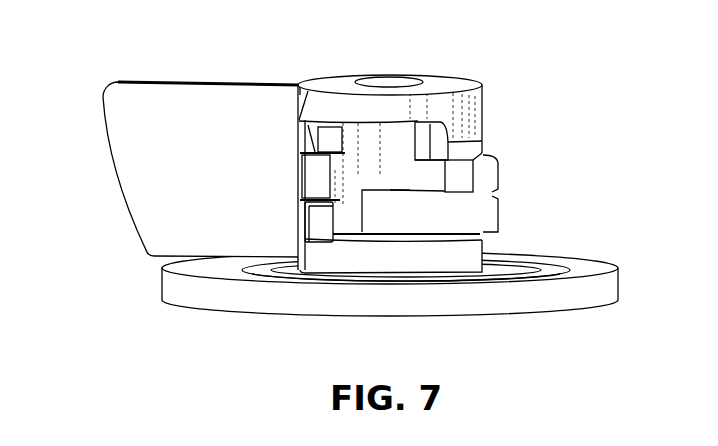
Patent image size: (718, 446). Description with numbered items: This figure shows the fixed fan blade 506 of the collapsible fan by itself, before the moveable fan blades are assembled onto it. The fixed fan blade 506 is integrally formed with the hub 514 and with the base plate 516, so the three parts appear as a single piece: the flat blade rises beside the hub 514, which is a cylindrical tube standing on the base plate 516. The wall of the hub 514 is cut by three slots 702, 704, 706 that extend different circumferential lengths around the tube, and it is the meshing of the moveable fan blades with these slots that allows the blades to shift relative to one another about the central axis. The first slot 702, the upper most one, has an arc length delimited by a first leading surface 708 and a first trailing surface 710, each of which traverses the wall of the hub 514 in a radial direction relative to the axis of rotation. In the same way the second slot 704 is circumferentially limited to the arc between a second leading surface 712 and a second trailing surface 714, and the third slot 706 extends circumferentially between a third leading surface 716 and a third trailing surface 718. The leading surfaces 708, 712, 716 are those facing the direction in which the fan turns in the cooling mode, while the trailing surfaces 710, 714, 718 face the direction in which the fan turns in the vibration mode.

The fixed fan blade 506 is at (153, 81).
The hub 514 is at (483, 96).
The base plate 516 is at (608, 258).
The first slot 702 is at (482, 141).
The second slot 704 is at (499, 172).
The third slot 706 is at (499, 213).
The first leading surface 708 is at (422, 136).
The first trailing surface 710 is at (328, 136).
The second leading surface 712 is at (455, 182).
The second trailing surface 714 is at (307, 186).
The third leading surface 716 is at (374, 212).
The third trailing surface 718 is at (320, 226).